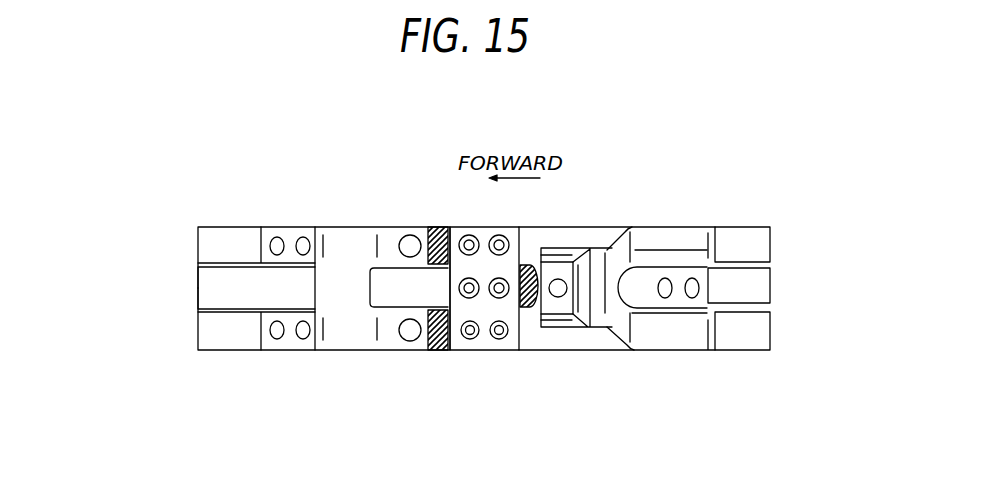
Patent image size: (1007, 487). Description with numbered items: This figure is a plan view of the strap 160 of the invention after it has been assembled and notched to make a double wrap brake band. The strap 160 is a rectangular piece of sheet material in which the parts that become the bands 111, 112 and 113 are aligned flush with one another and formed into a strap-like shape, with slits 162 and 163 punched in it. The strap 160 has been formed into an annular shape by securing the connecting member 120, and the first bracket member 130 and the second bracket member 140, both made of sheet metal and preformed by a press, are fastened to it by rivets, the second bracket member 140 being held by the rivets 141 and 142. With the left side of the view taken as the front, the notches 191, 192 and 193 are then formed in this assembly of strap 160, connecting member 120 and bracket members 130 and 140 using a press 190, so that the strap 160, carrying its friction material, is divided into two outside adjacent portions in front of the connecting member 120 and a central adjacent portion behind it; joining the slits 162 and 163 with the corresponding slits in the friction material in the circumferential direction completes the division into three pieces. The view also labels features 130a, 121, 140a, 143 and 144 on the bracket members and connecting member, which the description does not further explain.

The first bracket member 130 is at (251, 287).
The rear connector slot 130a is at (334, 337).
The slit 162 is at (222, 265).
The slit 163 is at (215, 307).
The notch 191 is at (420, 229).
The notch 192 is at (432, 350).
The press 190 is at (436, 350).
The connecting member 120 is at (451, 297).
The fastener hole 121 is at (471, 340).
The notch 193 is at (530, 307).
The second bracket member 140 is at (639, 282).
The forward assembly housing 140a is at (593, 256).
The rivet 142 is at (558, 297).
The guide rail 143 is at (695, 243).
The rivet 141 is at (669, 298).
The lower rail 144 is at (708, 342).
The strap 160 is at (792, 230).
The band 111 is at (766, 239).
The band 112 is at (764, 280).
The band 113 is at (762, 329).